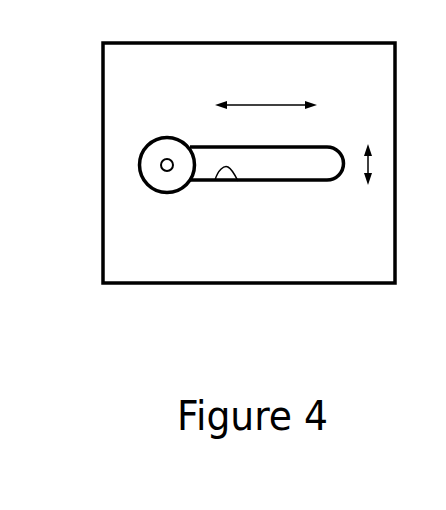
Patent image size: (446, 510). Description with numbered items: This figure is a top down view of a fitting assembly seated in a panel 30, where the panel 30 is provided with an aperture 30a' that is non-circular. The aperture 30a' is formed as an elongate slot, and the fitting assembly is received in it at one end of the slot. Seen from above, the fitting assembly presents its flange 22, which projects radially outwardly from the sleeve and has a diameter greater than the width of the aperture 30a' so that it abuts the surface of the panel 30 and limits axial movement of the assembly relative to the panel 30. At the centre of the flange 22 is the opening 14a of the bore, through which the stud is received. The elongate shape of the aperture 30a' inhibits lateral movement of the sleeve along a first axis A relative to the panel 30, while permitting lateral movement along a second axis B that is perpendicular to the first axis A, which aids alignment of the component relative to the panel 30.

The panel 30 is at (353, 251).
The aperture 30a' is at (266, 250).
The flange 22 is at (149, 148).
The opening 14a is at (161, 167).
The first axis A is at (368, 165).
The second axis B is at (263, 105).